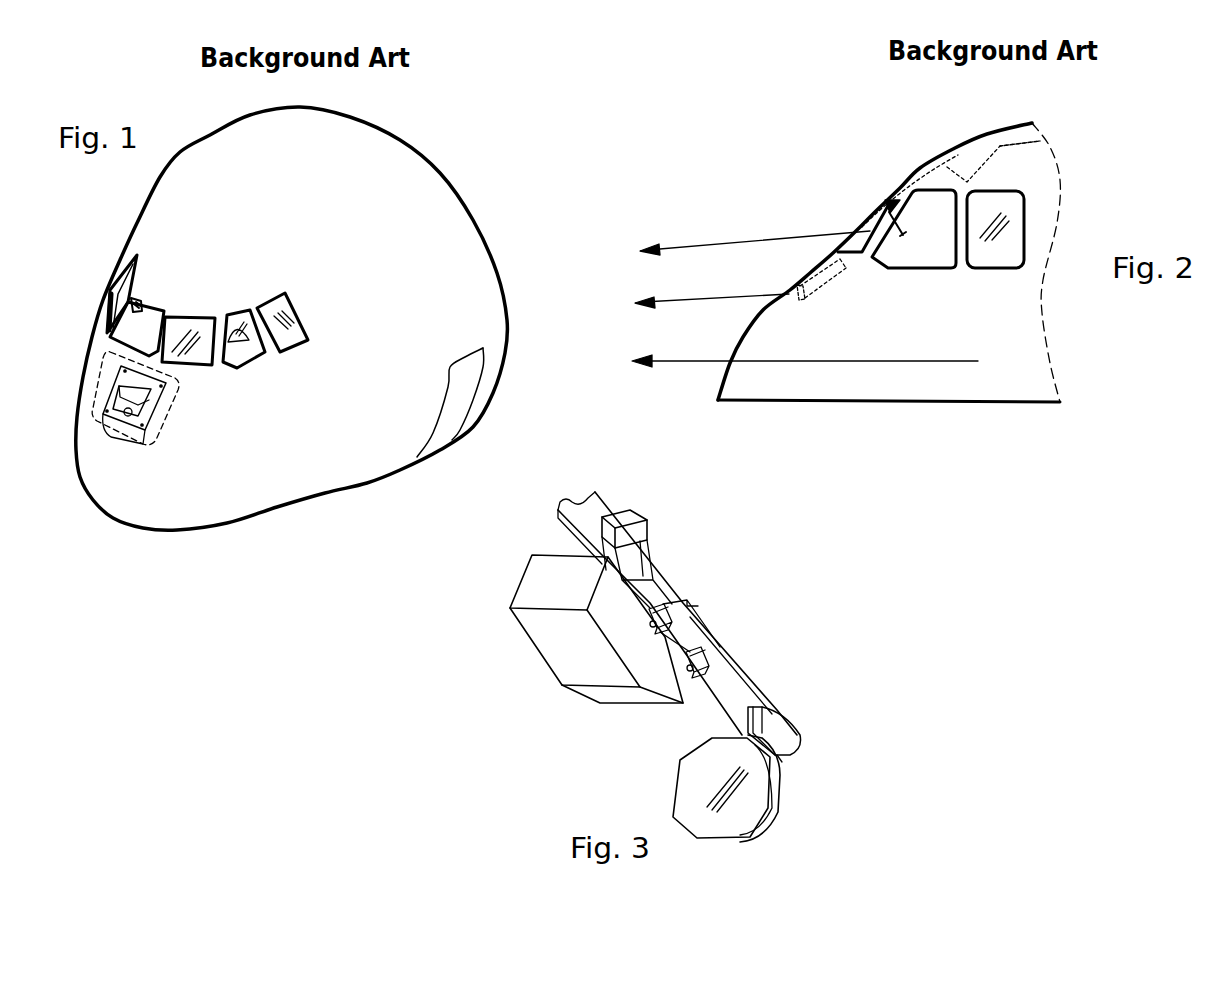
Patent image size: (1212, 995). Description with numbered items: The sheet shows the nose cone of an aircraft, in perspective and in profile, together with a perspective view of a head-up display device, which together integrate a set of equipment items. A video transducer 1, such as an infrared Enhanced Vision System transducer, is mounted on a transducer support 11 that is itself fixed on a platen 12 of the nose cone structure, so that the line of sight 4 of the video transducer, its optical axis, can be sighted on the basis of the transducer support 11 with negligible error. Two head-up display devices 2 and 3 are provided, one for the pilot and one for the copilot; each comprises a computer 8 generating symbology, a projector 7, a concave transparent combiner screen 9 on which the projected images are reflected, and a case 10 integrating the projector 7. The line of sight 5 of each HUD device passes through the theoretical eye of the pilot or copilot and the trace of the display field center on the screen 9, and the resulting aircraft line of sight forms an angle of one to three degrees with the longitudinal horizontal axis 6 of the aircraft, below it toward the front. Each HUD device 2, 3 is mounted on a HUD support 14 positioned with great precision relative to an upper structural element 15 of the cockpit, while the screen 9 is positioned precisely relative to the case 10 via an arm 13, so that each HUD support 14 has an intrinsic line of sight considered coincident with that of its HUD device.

In FIG. 1, the video transducer 1 is at (111, 416).
In FIG. 2, the video transducer 1 is at (802, 281).
In FIG. 1, the head-up display device 2 is at (137, 295).
In FIG. 2, the head-up display device 2 is at (1010, 157).
In FIG. 1, the head-up display device 3 is at (251, 348).
In FIG. 2, the line of sight of the video transducer 4 is at (694, 296).
In FIG. 2, the line of sight of the HUD device 5 is at (693, 240).
In FIG. 2, the longitudinal horizontal axis 6 is at (697, 360).
In FIG. 2, the projector 7 is at (985, 147).
In FIG. 2, the computer 8 is at (1020, 143).
In FIG. 2, the screen 9 is at (903, 228).
In FIG. 3, the screen 9 is at (685, 787).
In FIG. 2, the case 10 is at (967, 165).
In FIG. 3, the case 10 is at (542, 644).
In FIG. 1, the transducer support 11 is at (112, 372).
In FIG. 1, the platen 12 is at (110, 389).
In FIG. 3, the arm 13 is at (757, 695).
In FIG. 3, the HUD support 14 is at (645, 530).
In FIG. 3, the upper structural element 15 is at (598, 490).